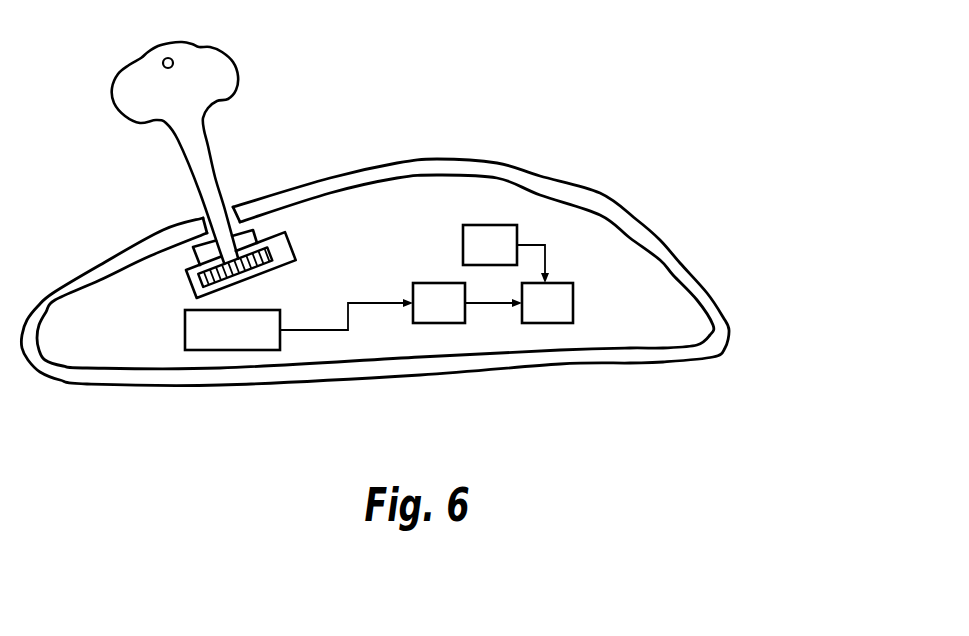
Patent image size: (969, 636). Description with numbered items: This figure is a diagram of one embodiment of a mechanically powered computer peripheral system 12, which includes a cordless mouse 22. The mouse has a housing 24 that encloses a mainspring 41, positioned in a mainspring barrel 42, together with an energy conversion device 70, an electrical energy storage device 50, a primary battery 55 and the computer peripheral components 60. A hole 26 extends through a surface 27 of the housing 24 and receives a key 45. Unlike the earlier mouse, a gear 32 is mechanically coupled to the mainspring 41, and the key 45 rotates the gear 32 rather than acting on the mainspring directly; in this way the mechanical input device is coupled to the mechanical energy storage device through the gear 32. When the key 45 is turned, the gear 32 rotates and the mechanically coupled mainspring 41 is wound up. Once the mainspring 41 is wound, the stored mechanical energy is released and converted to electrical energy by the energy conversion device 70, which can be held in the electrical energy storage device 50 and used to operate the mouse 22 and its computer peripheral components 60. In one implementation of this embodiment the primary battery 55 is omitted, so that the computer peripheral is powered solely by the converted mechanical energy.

The mechanically powered computer peripheral system 12 is at (790, 47).
The cordless mouse 22 is at (398, 124).
The housing 24 is at (632, 217).
The hole 26 is at (237, 195).
The surface 27 is at (480, 162).
The gear 32 is at (195, 255).
The mainspring 41 is at (268, 252).
The mainspring barrel 42 is at (189, 283).
The key 45 is at (232, 50).
The electrical energy storage device 50 is at (467, 303).
The primary battery 55 is at (506, 254).
The computer peripheral components 60 is at (547, 303).
The energy conversion device 70 is at (299, 324).